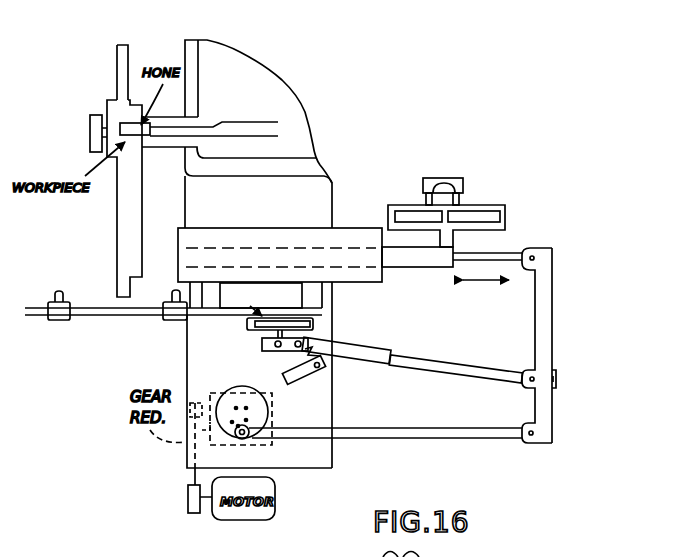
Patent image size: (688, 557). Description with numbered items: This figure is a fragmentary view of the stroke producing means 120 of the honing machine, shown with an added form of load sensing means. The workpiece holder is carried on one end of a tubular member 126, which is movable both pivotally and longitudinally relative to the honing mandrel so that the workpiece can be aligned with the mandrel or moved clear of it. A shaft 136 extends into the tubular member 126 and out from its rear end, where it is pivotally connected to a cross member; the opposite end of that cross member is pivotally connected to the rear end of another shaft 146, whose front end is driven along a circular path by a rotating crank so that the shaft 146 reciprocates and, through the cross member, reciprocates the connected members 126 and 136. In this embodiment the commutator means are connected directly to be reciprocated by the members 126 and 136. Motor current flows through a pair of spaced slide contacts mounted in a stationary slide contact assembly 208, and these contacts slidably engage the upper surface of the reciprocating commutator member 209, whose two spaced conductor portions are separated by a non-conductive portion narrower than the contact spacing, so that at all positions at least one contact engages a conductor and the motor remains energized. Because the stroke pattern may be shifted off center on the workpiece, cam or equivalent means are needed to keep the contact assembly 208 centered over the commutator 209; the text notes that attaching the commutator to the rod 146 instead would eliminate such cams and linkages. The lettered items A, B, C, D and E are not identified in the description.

The stroke producing means 120 is at (150, 349).
The tubular member 126 is at (405, 258).
The shaft 136 is at (517, 248).
The shaft 146 is at (433, 437).
The slide contact assembly 208 is at (475, 174).
The commutator member 209 is at (485, 213).
The cap element A is at (439, 187).
The switch contact B is at (415, 221).
The switch contact C is at (475, 221).
The plate D is at (247, 325).
The lever E is at (313, 323).